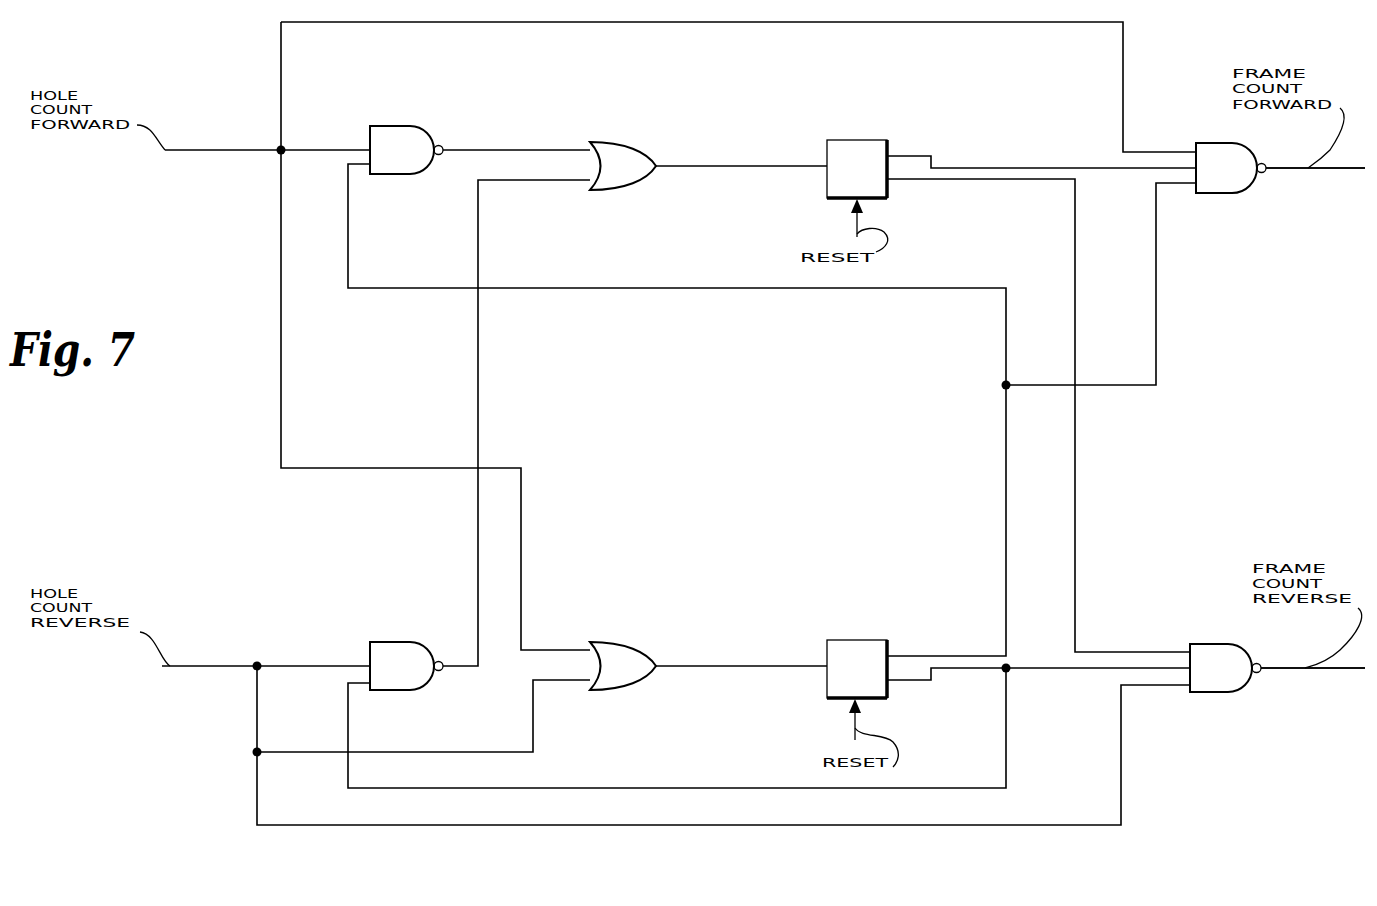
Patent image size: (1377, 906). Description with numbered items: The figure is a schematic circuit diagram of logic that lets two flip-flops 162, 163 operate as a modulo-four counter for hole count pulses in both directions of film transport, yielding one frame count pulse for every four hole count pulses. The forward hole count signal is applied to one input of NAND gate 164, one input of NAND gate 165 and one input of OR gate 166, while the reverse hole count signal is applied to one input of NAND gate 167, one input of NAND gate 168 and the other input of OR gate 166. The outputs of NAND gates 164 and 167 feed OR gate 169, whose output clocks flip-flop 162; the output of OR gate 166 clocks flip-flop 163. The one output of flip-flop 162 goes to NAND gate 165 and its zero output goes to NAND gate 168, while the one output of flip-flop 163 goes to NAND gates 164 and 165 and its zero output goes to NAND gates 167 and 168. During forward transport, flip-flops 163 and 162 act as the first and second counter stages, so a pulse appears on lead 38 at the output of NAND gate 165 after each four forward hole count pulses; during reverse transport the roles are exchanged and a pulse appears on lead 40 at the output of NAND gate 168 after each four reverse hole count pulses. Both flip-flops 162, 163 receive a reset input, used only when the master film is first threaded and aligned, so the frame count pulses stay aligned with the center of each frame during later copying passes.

The NAND gate 164 is at (410, 126).
The OR gate 169 is at (643, 186).
The flip-flop 162 is at (880, 140).
The NAND gate 165 is at (1226, 193).
The lead 38 is at (1340, 170).
The NAND gate 167 is at (445, 612).
The OR gate 166 is at (695, 620).
The flip-flop 163 is at (910, 620).
The NAND gate 168 is at (1228, 693).
The lead 40 is at (1318, 668).